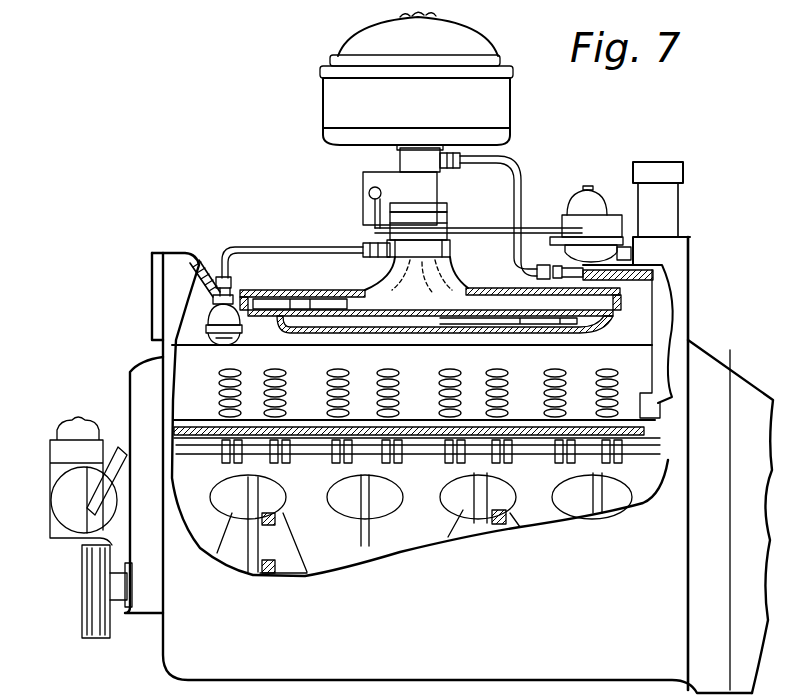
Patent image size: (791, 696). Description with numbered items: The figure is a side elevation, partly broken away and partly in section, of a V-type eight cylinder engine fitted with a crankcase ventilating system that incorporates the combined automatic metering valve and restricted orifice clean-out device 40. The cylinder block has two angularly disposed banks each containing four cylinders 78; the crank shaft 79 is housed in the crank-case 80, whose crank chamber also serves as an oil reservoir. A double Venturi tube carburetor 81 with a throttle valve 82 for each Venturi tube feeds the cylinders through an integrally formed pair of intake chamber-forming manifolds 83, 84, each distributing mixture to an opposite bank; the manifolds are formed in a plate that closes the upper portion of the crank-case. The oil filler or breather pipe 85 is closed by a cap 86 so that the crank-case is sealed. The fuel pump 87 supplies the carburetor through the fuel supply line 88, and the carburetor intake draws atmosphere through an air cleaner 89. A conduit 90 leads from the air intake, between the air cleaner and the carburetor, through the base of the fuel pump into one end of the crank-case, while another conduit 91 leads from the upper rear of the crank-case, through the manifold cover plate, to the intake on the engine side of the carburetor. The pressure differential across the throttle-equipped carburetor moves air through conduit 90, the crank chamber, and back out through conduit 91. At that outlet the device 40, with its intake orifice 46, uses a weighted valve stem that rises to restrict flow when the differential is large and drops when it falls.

The combined automatic metering valve and restricted orifice clean-out device 40 is at (209, 328).
The intake passage or orifice 46 is at (227, 346).
The cylinders 78 is at (285, 500).
The crank shaft 79 is at (305, 553).
The crank-case 80 is at (182, 632).
The carburetor 81 is at (437, 193).
The throttle valve 82 is at (378, 273).
The intake chamber-forming manifold 83 is at (320, 303).
The intake chamber-forming manifold 84 is at (337, 322).
The oil filler or breather pipe 85 is at (665, 218).
The cap 86 is at (675, 174).
The fuel pump 87 is at (595, 205).
The fuel supply line 88 is at (541, 218).
The air cleaner 89 is at (498, 99).
The conduit 90 is at (515, 172).
The conduit 91 is at (275, 227).